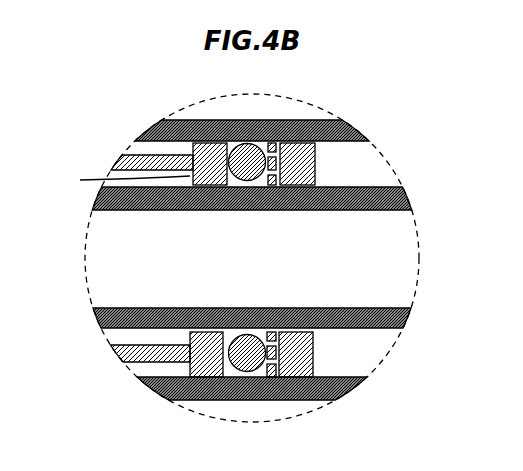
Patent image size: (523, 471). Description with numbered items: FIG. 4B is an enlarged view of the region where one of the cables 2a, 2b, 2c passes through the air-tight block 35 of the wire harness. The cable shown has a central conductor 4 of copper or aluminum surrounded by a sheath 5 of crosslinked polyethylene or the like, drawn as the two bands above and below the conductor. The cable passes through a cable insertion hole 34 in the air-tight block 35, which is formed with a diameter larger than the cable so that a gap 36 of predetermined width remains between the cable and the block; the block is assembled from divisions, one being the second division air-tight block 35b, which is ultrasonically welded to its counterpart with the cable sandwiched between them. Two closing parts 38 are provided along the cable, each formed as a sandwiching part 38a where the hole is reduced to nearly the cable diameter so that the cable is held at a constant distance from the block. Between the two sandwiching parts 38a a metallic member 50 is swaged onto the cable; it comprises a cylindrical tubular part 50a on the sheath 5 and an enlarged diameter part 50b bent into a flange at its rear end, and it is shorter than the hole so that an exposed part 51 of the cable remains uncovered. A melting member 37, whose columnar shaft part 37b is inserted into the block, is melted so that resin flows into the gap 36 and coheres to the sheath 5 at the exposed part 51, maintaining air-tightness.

The cable 2a is at (317, 105).
The cable 2b is at (418, 268).
The cable 2c is at (310, 410).
The central conductor 4 is at (413, 294).
The sheath 5 is at (406, 197).
The cable insertion hole 34 is at (177, 401).
The air-tight block 35 is at (135, 155).
The second division air-tight block 35b is at (117, 162).
The gap 36 is at (184, 118).
The melting member 37 is at (223, 120).
The shaft part 37b is at (272, 120).
The closing part 38 is at (320, 339).
The sandwiching part 38a is at (188, 339).
The metallic member 50 is at (315, 168).
The tubular part 50a is at (230, 400).
The enlarged diameter part 50b is at (312, 355).
The exposed part 51 is at (122, 180).